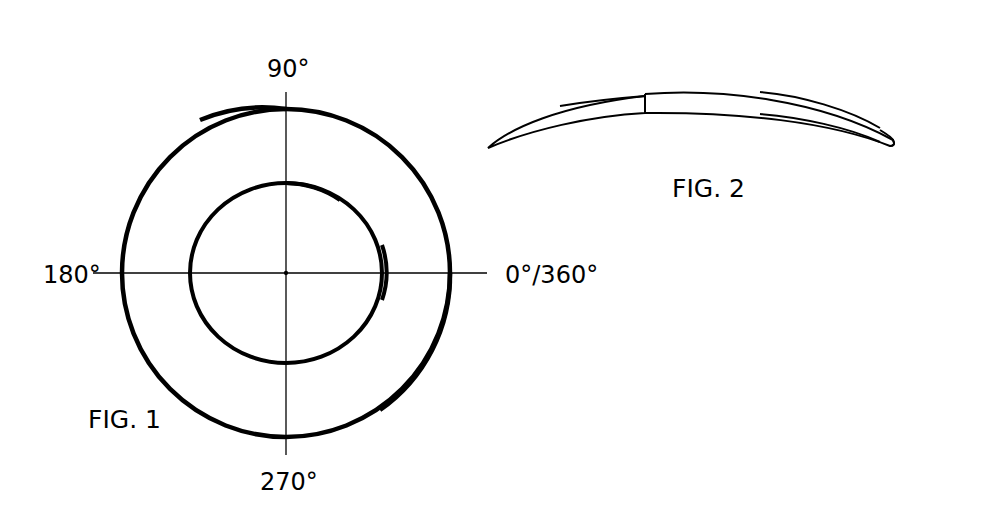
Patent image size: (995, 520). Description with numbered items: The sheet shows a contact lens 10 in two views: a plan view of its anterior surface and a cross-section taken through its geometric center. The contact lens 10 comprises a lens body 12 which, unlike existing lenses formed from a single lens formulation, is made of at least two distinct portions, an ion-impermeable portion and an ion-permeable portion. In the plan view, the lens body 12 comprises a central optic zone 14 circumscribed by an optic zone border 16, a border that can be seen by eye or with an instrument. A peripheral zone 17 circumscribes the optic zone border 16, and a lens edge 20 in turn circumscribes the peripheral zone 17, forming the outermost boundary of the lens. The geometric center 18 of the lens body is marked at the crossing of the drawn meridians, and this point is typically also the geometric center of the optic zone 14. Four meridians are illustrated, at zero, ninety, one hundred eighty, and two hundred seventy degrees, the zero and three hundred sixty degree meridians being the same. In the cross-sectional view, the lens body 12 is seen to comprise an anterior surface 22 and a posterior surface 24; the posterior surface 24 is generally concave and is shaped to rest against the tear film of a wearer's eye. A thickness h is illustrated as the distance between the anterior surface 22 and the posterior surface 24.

In FIG. 1, the contact lens 10 is at (150, 108).
In FIG. 2, the contact lens 10 is at (564, 55).
In FIG. 1, the lens body 12 is at (240, 150).
In FIG. 2, the lens body 12 is at (592, 108).
In FIG. 1, the optic zone 14 is at (306, 220).
In FIG. 1, the optic zone border 16 is at (350, 202).
In FIG. 1, the peripheral zone 17 is at (404, 234).
In FIG. 1, the geometric center 18 is at (286, 273).
In FIG. 1, the lens edge 20 is at (430, 358).
In FIG. 2, the lens edge 20 is at (893, 143).
In FIG. 2, the anterior surface 22 is at (803, 101).
In FIG. 2, the posterior surface 24 is at (815, 125).
In FIG. 2, the thickness h is at (647, 105).